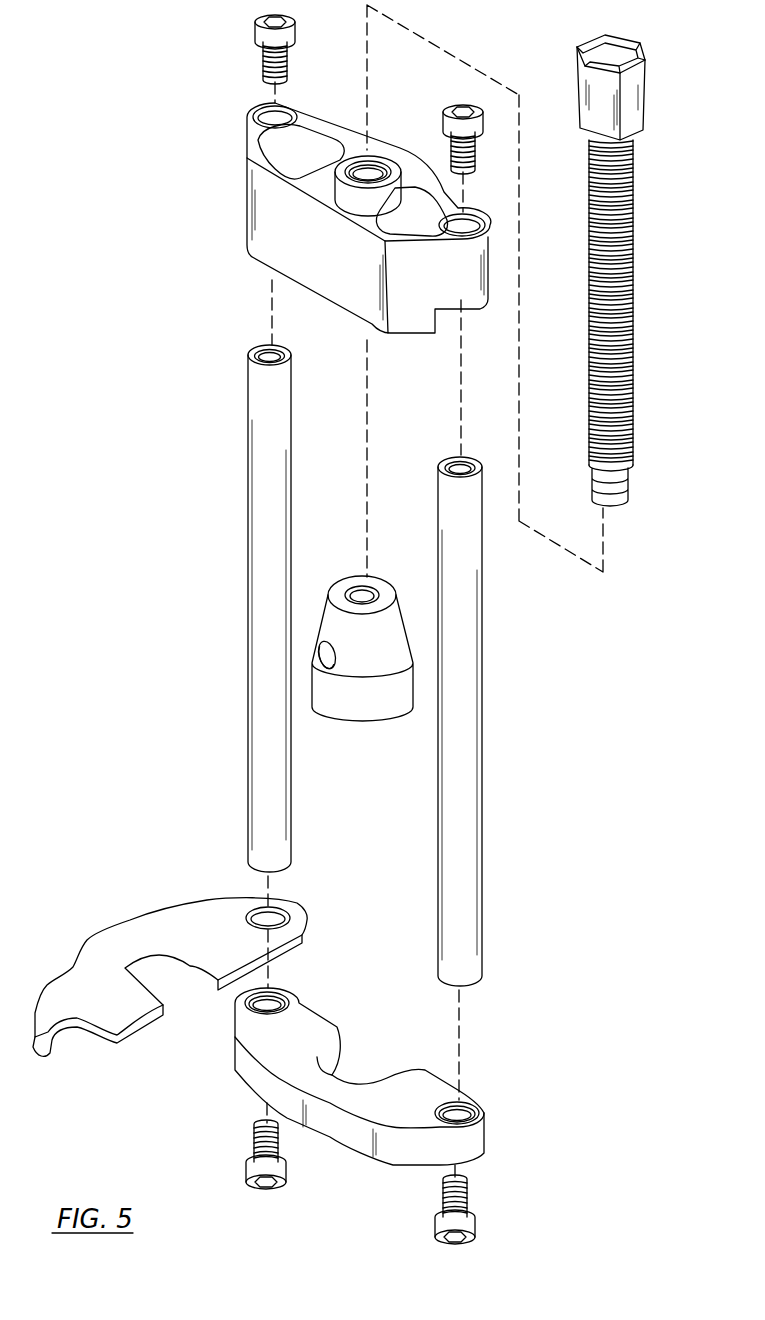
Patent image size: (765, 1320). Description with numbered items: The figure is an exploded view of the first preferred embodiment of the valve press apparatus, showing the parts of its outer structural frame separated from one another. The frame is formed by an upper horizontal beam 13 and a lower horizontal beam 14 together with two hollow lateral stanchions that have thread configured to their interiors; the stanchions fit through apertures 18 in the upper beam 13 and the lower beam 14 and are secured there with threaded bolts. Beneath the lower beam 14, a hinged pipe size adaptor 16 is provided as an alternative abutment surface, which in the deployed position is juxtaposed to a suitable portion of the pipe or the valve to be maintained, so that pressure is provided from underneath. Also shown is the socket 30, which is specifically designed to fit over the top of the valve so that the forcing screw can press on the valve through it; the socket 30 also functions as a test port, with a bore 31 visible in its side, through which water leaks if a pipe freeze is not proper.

The upper horizontal beam portion 13 is at (262, 227).
The lower horizontal beam portion 14 is at (300, 1025).
The hinged pipe size adaptor 16 is at (70, 993).
The apertures 18 is at (247, 110).
The socket 30 is at (371, 662).
The side bore of nut 31 is at (325, 672).